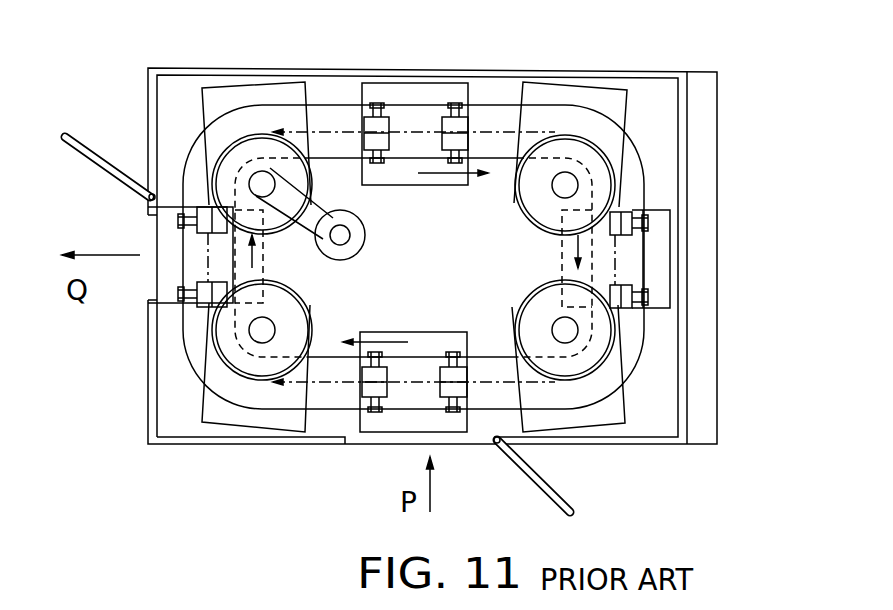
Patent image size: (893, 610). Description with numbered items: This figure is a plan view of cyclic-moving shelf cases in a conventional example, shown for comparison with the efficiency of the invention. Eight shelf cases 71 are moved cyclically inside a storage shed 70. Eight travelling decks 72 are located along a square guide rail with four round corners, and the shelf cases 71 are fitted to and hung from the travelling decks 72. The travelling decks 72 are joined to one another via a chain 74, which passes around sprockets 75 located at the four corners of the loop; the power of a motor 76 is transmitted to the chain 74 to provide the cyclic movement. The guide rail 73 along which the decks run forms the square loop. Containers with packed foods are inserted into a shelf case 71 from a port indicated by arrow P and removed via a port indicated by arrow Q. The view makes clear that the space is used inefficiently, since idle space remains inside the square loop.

The storage shed 70 is at (662, 135).
The shelf case 71 is at (605, 418).
The travelling deck 72 is at (635, 273).
The endless belt track 73 is at (627, 358).
The chain 74 is at (618, 248).
The sprocket 75 is at (296, 178).
The motor 76 is at (357, 248).